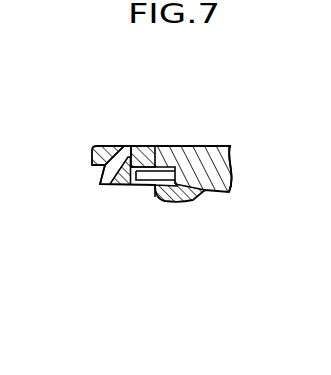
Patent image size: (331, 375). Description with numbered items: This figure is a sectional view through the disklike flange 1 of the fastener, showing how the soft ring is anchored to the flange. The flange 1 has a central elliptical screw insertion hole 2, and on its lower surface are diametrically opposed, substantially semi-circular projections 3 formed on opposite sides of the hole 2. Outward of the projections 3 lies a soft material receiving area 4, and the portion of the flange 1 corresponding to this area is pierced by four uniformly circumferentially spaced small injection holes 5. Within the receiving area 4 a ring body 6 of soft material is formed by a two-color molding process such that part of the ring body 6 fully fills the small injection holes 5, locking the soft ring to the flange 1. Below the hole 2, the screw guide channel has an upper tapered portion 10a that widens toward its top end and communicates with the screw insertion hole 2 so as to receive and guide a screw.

The flange 1 is at (182, 146).
The screw insertion hole 2 is at (212, 146).
The projection 3 is at (158, 146).
The soft material receiving area 4 is at (100, 176).
The small injection hole 5 is at (120, 146).
The ring body 6 is at (122, 185).
The upper tapered portion 10a is at (212, 199).